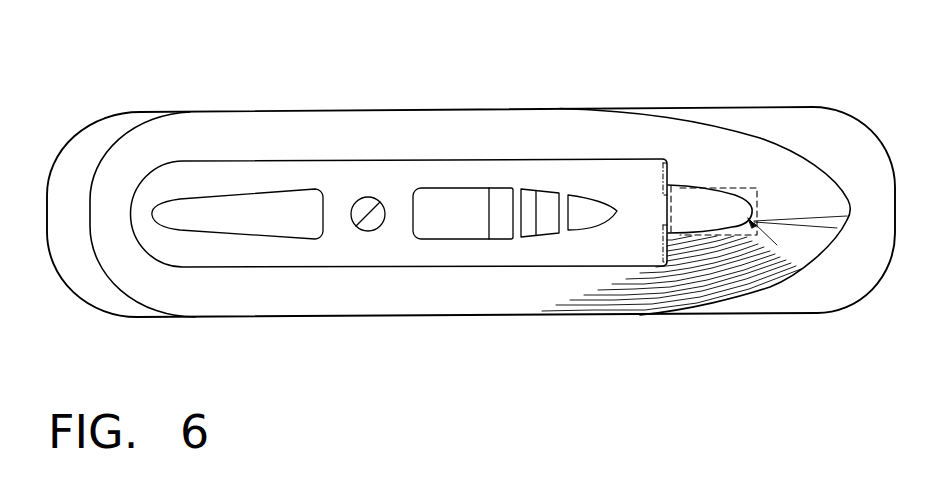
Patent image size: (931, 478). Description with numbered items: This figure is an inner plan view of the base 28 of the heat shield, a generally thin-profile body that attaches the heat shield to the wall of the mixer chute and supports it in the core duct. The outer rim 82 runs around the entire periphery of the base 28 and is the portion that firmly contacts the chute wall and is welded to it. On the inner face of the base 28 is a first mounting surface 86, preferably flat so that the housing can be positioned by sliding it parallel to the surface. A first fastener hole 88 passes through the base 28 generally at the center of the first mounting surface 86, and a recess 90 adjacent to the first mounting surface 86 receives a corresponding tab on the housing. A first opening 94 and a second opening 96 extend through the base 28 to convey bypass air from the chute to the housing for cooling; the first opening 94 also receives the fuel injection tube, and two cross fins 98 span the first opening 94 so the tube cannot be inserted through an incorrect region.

The base 28 is at (429, 110).
The outer rim 82 is at (591, 108).
The first mounting surface 86 is at (390, 258).
The first fastener hole 88 is at (371, 197).
The recess 90 is at (685, 193).
The first opening 94 is at (437, 223).
The second opening 96 is at (253, 229).
The cross fins 98 is at (568, 218).